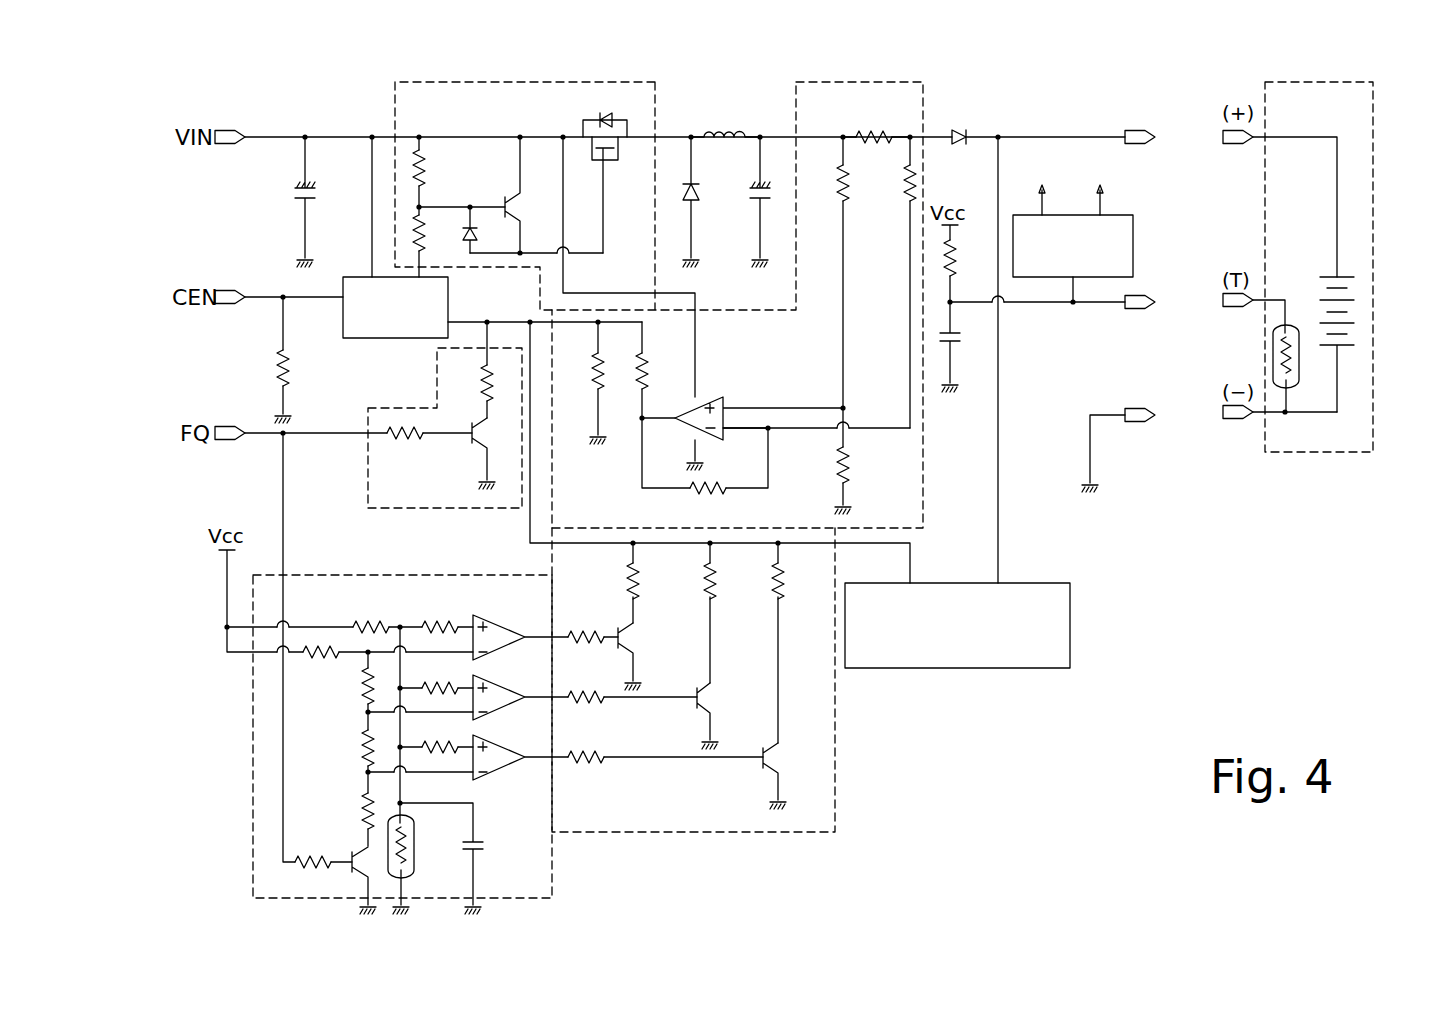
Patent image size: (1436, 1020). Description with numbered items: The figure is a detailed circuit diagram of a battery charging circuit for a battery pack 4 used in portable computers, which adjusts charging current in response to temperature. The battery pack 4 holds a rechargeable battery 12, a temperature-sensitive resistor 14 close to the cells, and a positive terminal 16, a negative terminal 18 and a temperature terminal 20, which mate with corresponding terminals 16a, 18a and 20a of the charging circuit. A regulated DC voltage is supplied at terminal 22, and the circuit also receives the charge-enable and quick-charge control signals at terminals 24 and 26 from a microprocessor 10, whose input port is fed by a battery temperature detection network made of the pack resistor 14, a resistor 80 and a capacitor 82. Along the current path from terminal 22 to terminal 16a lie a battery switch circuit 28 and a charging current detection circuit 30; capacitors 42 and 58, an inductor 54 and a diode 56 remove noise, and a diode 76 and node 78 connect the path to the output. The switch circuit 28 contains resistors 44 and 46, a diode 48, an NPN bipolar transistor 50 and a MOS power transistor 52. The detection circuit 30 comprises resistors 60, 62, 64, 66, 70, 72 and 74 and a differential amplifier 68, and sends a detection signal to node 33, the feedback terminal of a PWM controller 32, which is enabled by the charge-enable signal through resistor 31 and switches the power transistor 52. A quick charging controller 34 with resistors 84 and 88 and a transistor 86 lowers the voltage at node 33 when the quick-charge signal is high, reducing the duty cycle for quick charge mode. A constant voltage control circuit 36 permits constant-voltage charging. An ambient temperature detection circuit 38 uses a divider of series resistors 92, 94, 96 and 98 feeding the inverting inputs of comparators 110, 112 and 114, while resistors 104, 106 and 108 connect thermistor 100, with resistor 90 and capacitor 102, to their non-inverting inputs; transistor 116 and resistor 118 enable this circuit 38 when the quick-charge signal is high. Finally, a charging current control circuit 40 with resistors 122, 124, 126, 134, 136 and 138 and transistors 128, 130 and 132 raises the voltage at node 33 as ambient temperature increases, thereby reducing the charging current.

The battery pack 4 is at (1375, 90).
The microprocessor 10 is at (1125, 215).
The rechargeable battery 12 is at (1329, 276).
The temperature-sensitive resistor 14 is at (1301, 368).
The positive terminal 16 is at (1226, 144).
The negative terminal 18 is at (1226, 419).
The temperature terminal 20 is at (1226, 307).
The positive terminal of the battery charging circuit 16a is at (1157, 114).
The negative terminal of the battery charging circuit 18a is at (1157, 397).
The temperature terminal of the battery charging circuit 20a is at (1157, 284).
The terminal 22 is at (258, 117).
The charge enable terminal CEN 24 is at (258, 277).
The frequency terminal FQ 26 is at (225, 426).
The battery switch circuit 28 is at (658, 85).
The charging current detection circuit 30 is at (926, 88).
The resistor 31 is at (270, 358).
The pulse width modulation (PWM) controller IC 32 is at (372, 339).
The node 33 is at (489, 321).
The quick charging control circuit 34 is at (375, 509).
The constant voltage control circuit 36 is at (1025, 583).
The ambient temperature detection circuit 38 is at (252, 757).
The charging current control circuit 40 is at (838, 730).
The capacitor 42 is at (318, 202).
The resistor 44 is at (435, 172).
The resistor 46 is at (435, 240).
The diode 48 is at (463, 228).
The NPN bipolar transistor 50 is at (536, 196).
The MOS power transistor 52 is at (605, 169).
The inductor 54 is at (725, 121).
The diode 56 is at (704, 202).
The capacitor 58 is at (771, 202).
The resistor 60 is at (876, 124).
The resistor 62 is at (827, 292).
The resistor 64 is at (893, 282).
The resistor 66 is at (858, 480).
The differential amplifier 68 is at (792, 405).
The resistor 70 is at (706, 471).
The resistor 72 is at (657, 371).
The resistor 74 is at (583, 381).
The diode 76 is at (955, 124).
The output node 78 is at (999, 136).
The resistor 80 is at (965, 263).
The capacitor 82 is at (963, 345).
The resistor 84 is at (471, 370).
The transistor 86 is at (492, 453).
The resistor 88 is at (376, 447).
The resistor 90 is at (387, 613).
The resistor 92 is at (386, 668).
The resistor 94 is at (401, 691).
The resistor 96 is at (401, 761).
The resistor 98 is at (352, 817).
The temperature-sensitive resistor 100 is at (423, 857).
The capacitor 102 is at (462, 858).
The resistor 104 is at (445, 613).
The resistor 106 is at (435, 674).
The resistor 108 is at (435, 733).
The comparator 110 is at (520, 631).
The comparator 112 is at (520, 691).
The comparator 114 is at (520, 751).
The transistor 116 is at (350, 869).
The resistor 118 is at (317, 664).
The resistor 122 is at (655, 583).
The resistor 124 is at (732, 613).
The resistor 126 is at (800, 643).
The transistor 128 is at (648, 656).
The transistor 130 is at (727, 716).
The transistor 132 is at (793, 776).
The resistor 134 is at (593, 652).
The resistor 136 is at (632, 712).
The resistor 138 is at (665, 772).